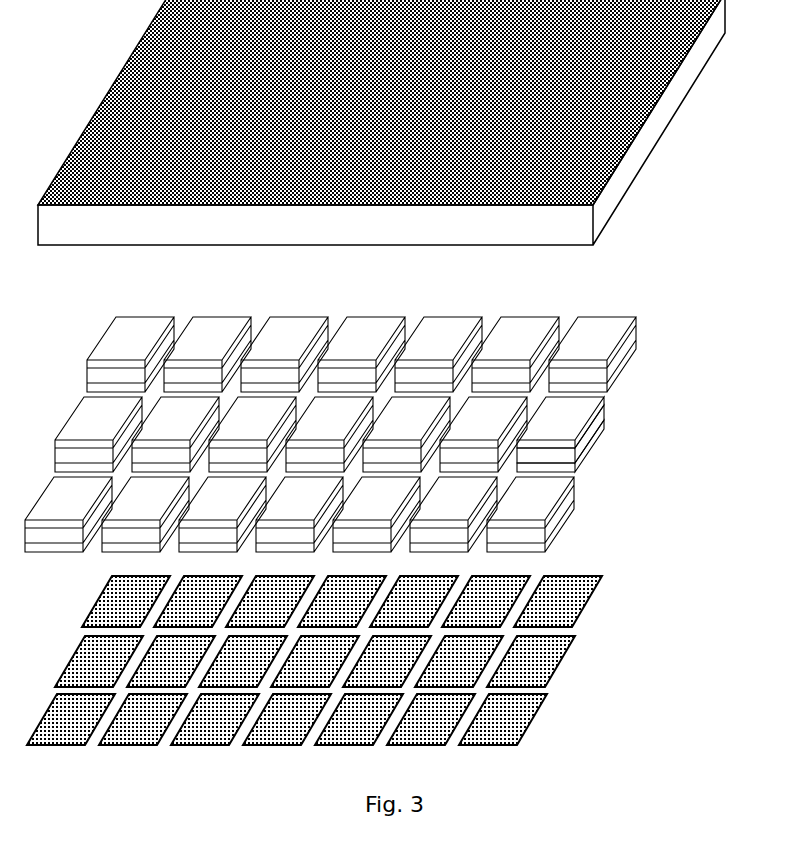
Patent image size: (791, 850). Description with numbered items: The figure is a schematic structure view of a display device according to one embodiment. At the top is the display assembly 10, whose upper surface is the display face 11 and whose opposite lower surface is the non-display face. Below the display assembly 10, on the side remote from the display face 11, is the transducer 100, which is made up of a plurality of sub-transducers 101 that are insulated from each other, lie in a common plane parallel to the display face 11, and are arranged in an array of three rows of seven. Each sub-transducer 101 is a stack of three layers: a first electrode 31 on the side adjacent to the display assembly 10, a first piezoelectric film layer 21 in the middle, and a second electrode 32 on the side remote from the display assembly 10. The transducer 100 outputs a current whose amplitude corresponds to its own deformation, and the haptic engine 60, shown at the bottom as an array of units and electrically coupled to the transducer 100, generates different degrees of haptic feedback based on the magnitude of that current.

The display assembly 10 is at (403, 122).
The display face 11 is at (107, 120).
The transducer 100 is at (383, 407).
The sub-transducer 101 is at (629, 461).
The first electrode 31 is at (577, 413).
The first piezoelectric film layer 21 is at (585, 442).
The second electrode 32 is at (582, 460).
The haptic engine 60 is at (537, 670).